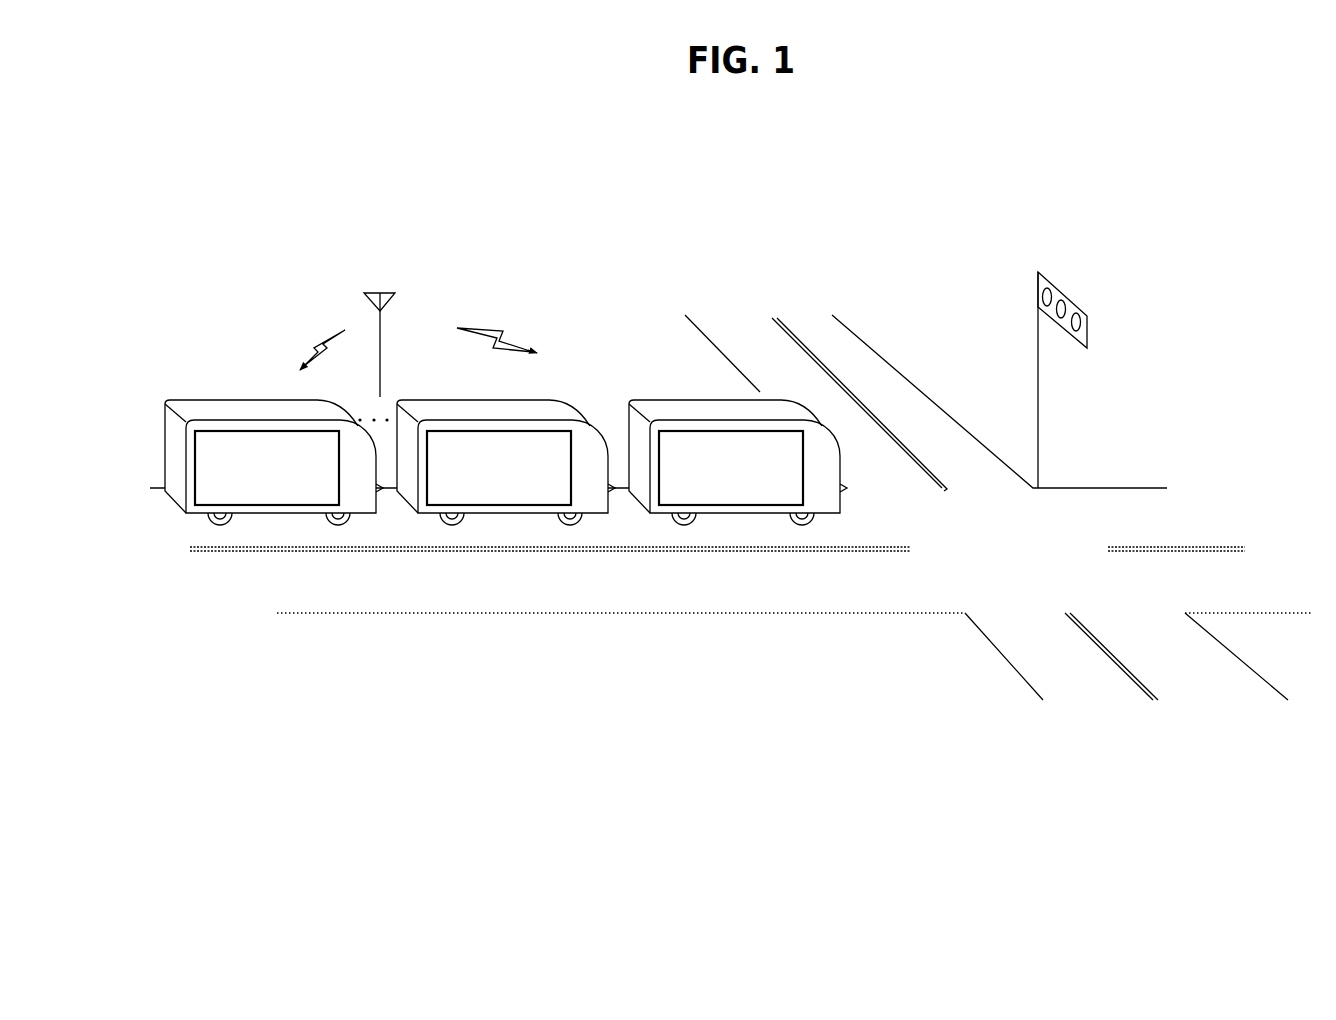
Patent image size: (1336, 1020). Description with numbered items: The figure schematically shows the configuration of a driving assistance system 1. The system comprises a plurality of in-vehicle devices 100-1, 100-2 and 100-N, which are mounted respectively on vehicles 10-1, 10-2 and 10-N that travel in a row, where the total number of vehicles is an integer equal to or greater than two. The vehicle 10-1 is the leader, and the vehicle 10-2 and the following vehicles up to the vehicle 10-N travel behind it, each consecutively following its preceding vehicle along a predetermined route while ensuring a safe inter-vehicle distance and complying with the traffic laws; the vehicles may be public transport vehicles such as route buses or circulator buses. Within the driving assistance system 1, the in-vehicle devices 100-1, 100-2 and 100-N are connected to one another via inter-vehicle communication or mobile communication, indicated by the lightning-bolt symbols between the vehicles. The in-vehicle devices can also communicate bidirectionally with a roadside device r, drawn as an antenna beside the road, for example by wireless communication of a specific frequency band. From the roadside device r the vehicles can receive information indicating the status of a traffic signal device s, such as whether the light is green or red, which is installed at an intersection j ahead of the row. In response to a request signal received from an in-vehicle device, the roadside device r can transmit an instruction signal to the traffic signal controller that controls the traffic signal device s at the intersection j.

The driving assistance system 1 is at (747, 270).
The vehicle 10-N is at (227, 399).
The vehicle 10-2 is at (457, 401).
The vehicle 10-1 is at (668, 402).
The in-vehicle device 100-N is at (263, 432).
The in-vehicle device 100-2 is at (508, 430).
The in-vehicle device 100-1 is at (718, 430).
The roadside device r is at (373, 292).
The traffic signal device s is at (1062, 290).
The intersection j is at (1013, 547).